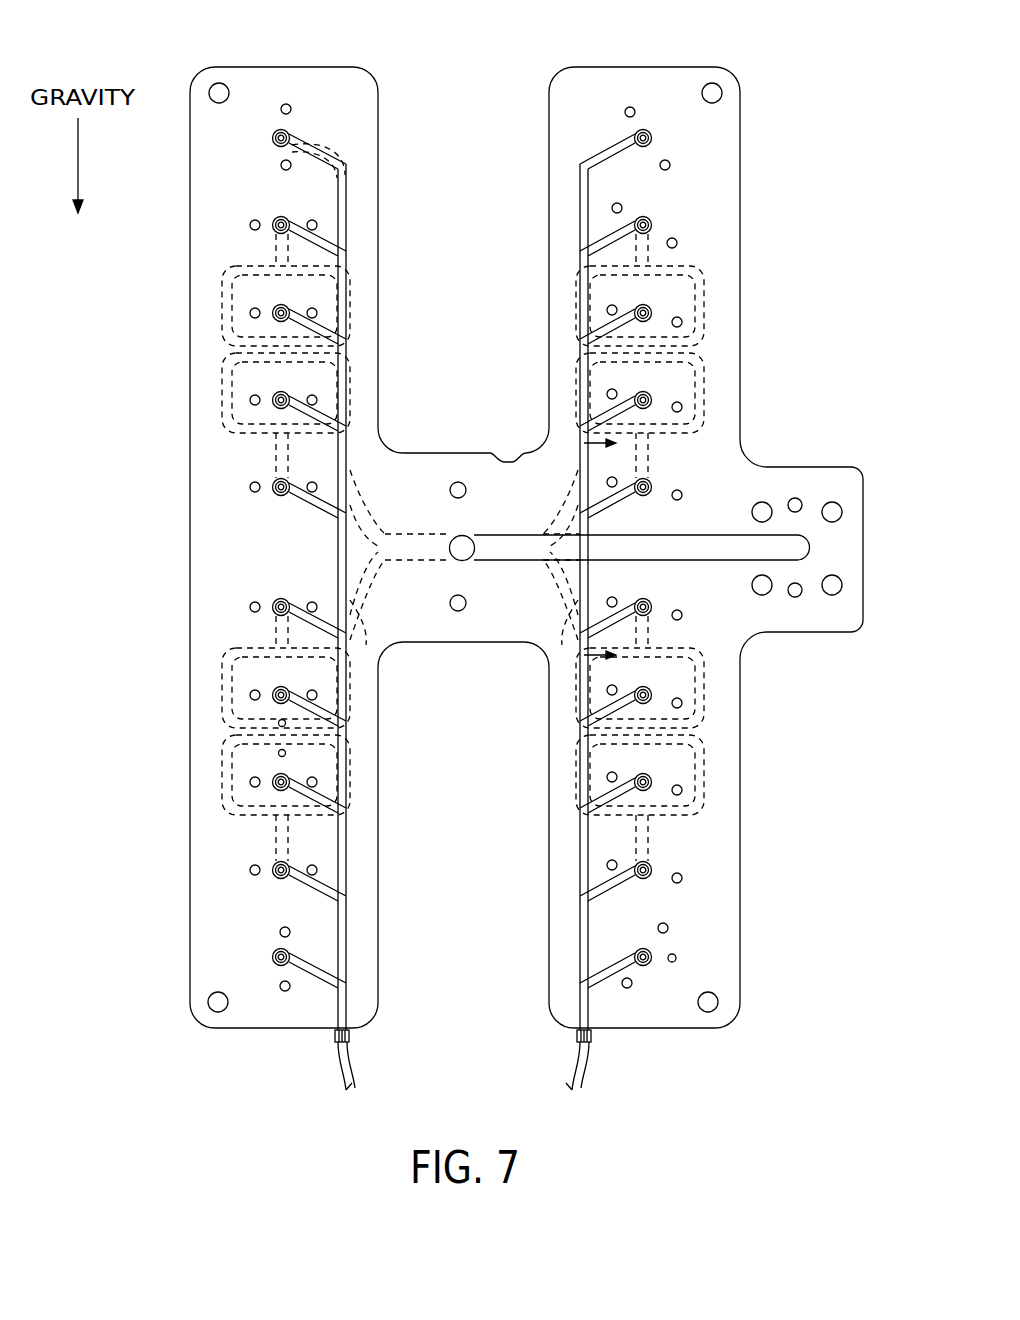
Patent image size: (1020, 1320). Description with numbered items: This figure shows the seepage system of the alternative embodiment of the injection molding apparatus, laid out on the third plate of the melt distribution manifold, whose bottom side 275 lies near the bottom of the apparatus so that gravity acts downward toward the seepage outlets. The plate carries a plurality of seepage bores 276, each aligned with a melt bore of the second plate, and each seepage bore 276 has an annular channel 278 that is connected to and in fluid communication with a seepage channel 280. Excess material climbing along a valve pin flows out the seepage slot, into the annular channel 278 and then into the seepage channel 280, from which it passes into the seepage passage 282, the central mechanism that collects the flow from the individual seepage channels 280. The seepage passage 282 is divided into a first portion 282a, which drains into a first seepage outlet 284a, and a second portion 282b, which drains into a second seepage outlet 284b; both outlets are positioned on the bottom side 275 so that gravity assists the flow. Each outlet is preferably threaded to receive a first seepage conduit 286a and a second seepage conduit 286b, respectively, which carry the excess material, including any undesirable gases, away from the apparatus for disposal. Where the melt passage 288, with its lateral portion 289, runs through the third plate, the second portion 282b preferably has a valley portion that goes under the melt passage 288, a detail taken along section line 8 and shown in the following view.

The manifold plate 275 is at (698, 1030).
The outlet fitting 276 is at (652, 955).
The mounting hole 278 is at (262, 883).
The inlet fitting 280 is at (303, 150).
The distribution channel 282 is at (330, 556).
The left channel 282a is at (347, 195).
The right channel 282b is at (585, 200).
The left drain tube 284a is at (336, 1030).
The right drain tube 284b is at (592, 1030).
The left drain connector 286a is at (352, 1078).
The right drain connector 286b is at (568, 1078).
The cross channel 288 is at (375, 605).
The gasket outline 289 is at (690, 355).
The section line for FIG. 8 is at (609, 550).